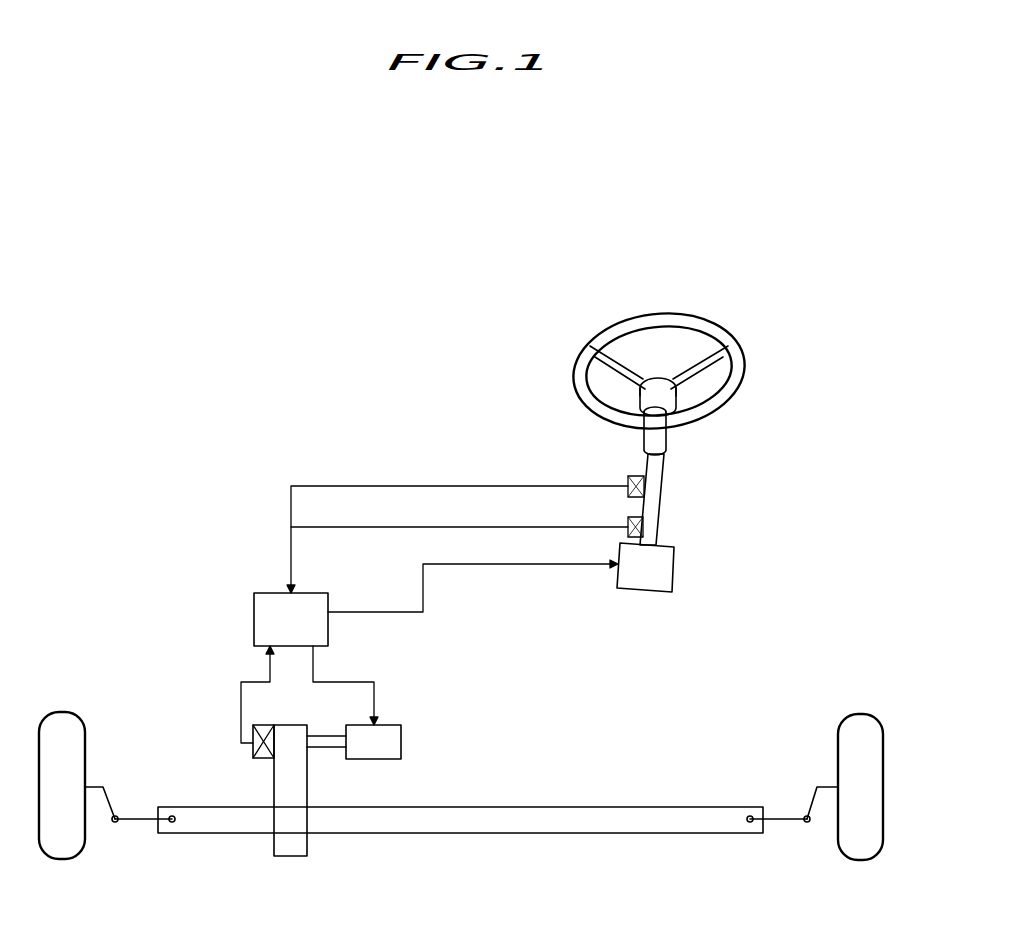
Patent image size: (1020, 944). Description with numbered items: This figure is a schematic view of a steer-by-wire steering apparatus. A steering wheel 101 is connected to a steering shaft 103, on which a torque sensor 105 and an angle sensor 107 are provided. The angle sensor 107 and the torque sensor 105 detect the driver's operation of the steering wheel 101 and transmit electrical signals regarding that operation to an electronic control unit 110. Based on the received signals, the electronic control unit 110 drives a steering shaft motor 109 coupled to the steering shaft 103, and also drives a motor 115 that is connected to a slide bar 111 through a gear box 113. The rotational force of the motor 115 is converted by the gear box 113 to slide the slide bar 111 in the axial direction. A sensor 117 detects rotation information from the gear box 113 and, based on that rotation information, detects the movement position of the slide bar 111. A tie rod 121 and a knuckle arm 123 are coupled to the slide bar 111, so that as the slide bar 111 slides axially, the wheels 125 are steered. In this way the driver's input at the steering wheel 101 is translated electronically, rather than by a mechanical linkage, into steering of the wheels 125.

The steering wheel 101 is at (740, 374).
The steering shaft 103 is at (651, 500).
The torque sensor 105 is at (628, 482).
The angle sensor 107 is at (628, 524).
The steering shaft motor 109 is at (668, 570).
The electronic control unit 110 is at (254, 622).
The slide bar 111 is at (375, 826).
The gear box 113 is at (287, 847).
The motor 115 is at (401, 743).
The sensor 117 is at (253, 748).
The tie rod 121 is at (130, 823).
The knuckle arm 123 is at (112, 802).
The wheels 125 is at (83, 740).